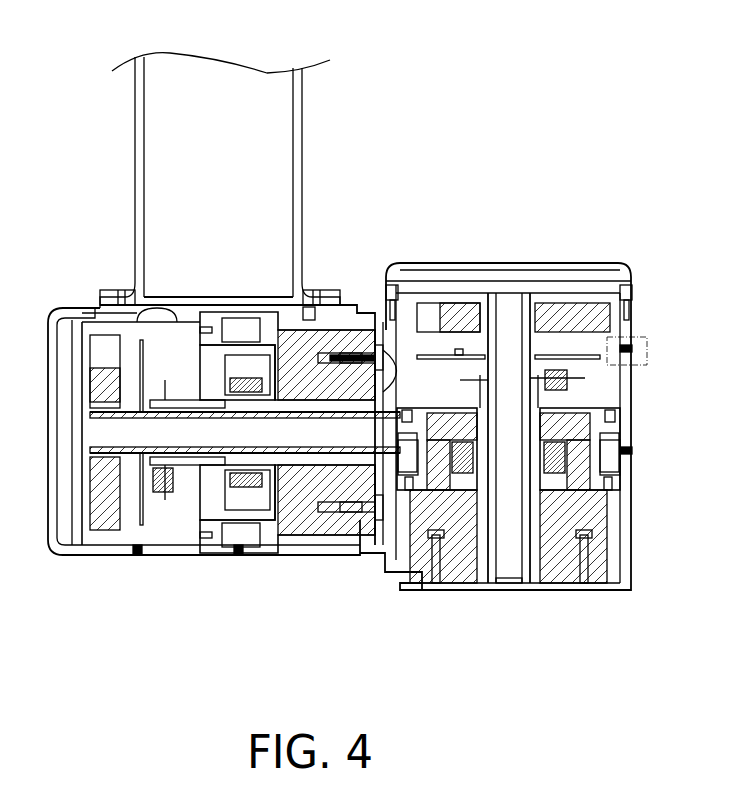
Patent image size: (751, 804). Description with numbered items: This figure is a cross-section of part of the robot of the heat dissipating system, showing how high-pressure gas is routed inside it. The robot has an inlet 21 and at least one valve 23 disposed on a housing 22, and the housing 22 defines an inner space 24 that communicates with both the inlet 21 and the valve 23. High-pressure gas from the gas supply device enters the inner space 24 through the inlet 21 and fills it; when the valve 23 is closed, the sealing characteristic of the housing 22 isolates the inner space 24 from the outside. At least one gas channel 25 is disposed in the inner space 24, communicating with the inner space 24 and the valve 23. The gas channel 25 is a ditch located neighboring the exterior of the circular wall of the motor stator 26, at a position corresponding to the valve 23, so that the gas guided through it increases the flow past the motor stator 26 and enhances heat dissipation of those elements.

The inlet 21 is at (505, 596).
The housing 22 is at (610, 560).
The valve 23 is at (138, 553).
The inner space 24 is at (600, 388).
The gas channel 25 is at (380, 482).
The motor stator 26 is at (445, 487).